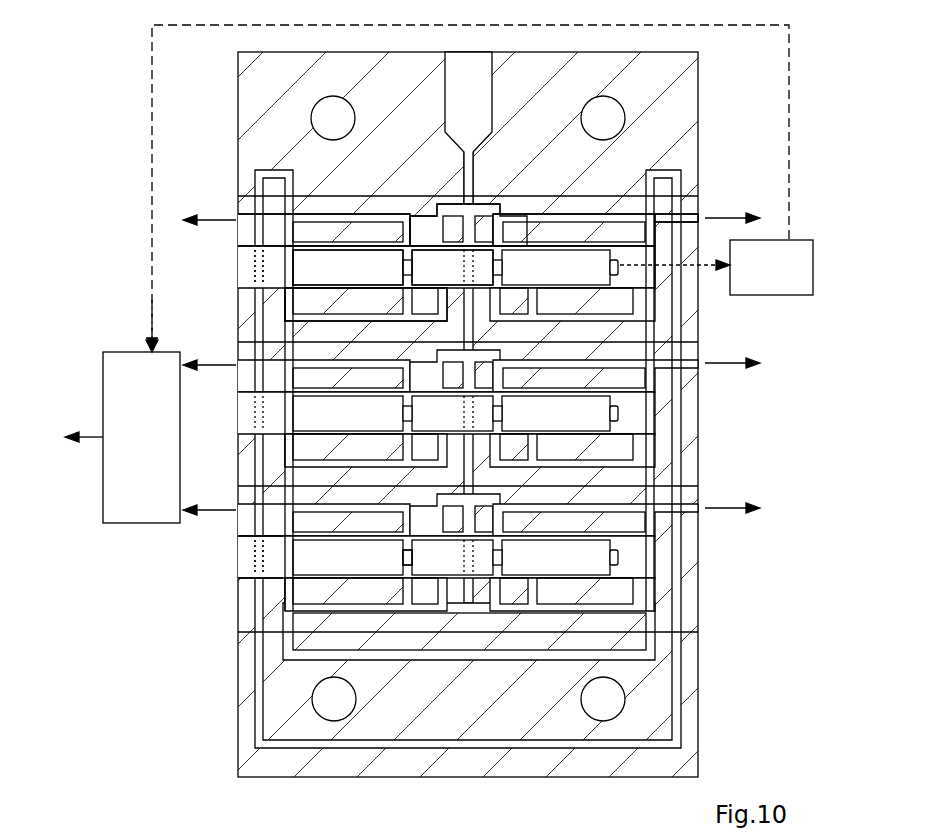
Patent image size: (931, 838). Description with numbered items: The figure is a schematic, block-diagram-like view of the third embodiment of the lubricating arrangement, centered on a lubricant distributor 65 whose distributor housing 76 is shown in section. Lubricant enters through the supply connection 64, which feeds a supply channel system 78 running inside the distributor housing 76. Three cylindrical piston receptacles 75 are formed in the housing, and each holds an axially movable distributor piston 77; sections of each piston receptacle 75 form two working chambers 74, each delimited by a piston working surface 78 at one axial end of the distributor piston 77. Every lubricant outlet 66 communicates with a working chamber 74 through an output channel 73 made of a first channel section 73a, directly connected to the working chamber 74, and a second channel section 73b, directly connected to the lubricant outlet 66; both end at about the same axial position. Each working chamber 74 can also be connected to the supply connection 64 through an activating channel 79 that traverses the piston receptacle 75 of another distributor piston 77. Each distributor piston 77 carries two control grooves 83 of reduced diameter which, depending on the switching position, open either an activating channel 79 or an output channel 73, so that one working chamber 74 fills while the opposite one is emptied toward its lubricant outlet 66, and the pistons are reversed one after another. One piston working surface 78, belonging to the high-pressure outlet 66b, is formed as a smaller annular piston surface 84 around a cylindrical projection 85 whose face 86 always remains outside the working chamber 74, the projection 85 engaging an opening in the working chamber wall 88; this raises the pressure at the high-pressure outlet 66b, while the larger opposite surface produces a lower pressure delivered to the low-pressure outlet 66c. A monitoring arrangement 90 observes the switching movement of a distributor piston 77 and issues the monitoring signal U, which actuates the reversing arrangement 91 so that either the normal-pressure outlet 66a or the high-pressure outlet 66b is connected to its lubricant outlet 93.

The supply connection 64 is at (448, 76).
The lubricant distributor 65 is at (232, 710).
The lubricant outlet 66 is at (238, 505).
The normal-pressure outlet 66a is at (743, 533).
The high-pressure outlet 66b is at (191, 346).
The low-pressure outlet 66c is at (700, 366).
The output channel 73 is at (597, 196).
The first channel section 73a is at (290, 300).
The second channel section 73b is at (305, 216).
The working chamber 74 is at (300, 272).
The piston receptacle 75 is at (288, 248).
The distributor housing 76 is at (230, 108).
The distributor piston 77 is at (262, 578).
The piston working surface 78 is at (462, 196).
The activating channel 79 is at (447, 212).
The control groove 83 is at (214, 392).
The annular piston surface 84 is at (258, 548).
The cylindrical projection 85 is at (255, 567).
The face 86 is at (255, 553).
The working chamber wall 88 is at (290, 582).
The monitoring arrangement 90 is at (716, 267).
The reversing arrangement 91 is at (141, 437).
The lubricant outlet of the reversing arrangement 93 is at (93, 436).
The monitoring signal U is at (152, 196).